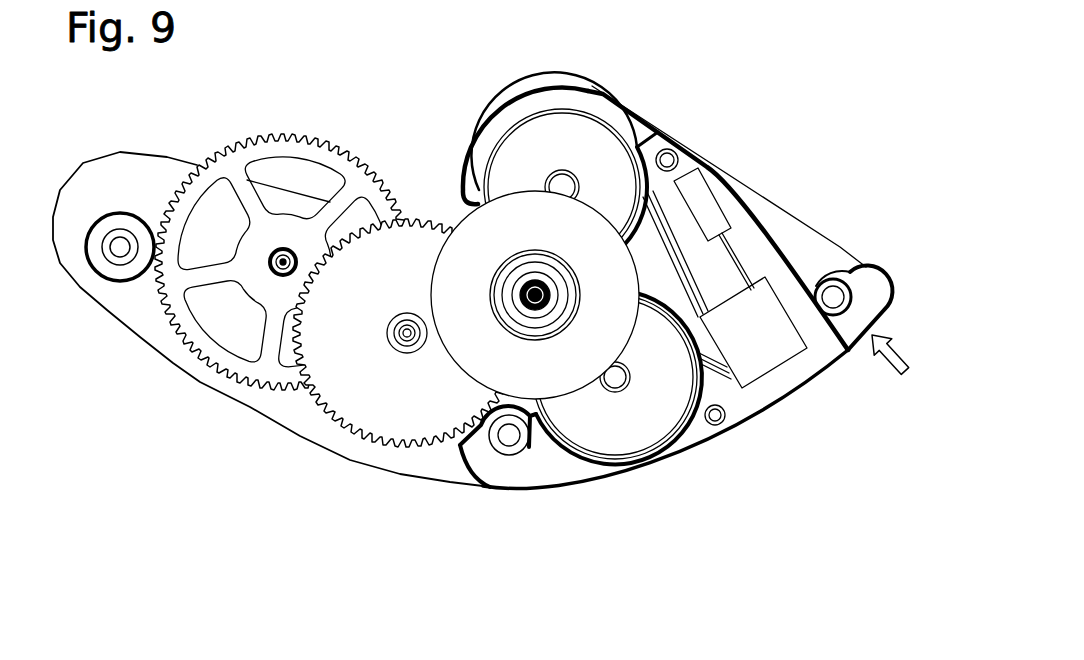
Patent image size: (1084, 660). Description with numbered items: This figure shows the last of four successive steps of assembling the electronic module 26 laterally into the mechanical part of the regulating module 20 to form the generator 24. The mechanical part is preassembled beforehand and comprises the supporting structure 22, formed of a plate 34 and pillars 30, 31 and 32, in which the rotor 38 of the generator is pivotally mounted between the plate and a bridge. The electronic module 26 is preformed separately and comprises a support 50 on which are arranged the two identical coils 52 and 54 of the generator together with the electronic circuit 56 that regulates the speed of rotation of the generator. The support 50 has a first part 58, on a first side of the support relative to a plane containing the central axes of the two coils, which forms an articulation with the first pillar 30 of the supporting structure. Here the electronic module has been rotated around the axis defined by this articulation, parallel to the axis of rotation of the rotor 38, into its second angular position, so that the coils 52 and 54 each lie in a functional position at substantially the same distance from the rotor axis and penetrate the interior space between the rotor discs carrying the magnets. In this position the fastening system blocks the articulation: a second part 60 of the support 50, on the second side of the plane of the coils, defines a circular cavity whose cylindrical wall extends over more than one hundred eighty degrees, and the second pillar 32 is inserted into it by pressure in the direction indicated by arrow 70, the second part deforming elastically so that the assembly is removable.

The regulating module 20 is at (403, 168).
The supporting structure 22 is at (252, 455).
The generator 24 is at (545, 155).
The electronic module 26 is at (780, 238).
The pillar 30 is at (506, 455).
The pillar 31 is at (108, 257).
The second pillar 32 is at (830, 283).
The plate 34 is at (288, 423).
The rotor 38 is at (520, 245).
The support 50 is at (542, 462).
The coil 52 is at (590, 137).
The coil 54 is at (636, 428).
The electronic circuit 56 is at (747, 238).
The first part 58 is at (461, 458).
The second part 60 is at (873, 287).
The actuation direction arrow 70 is at (858, 305).